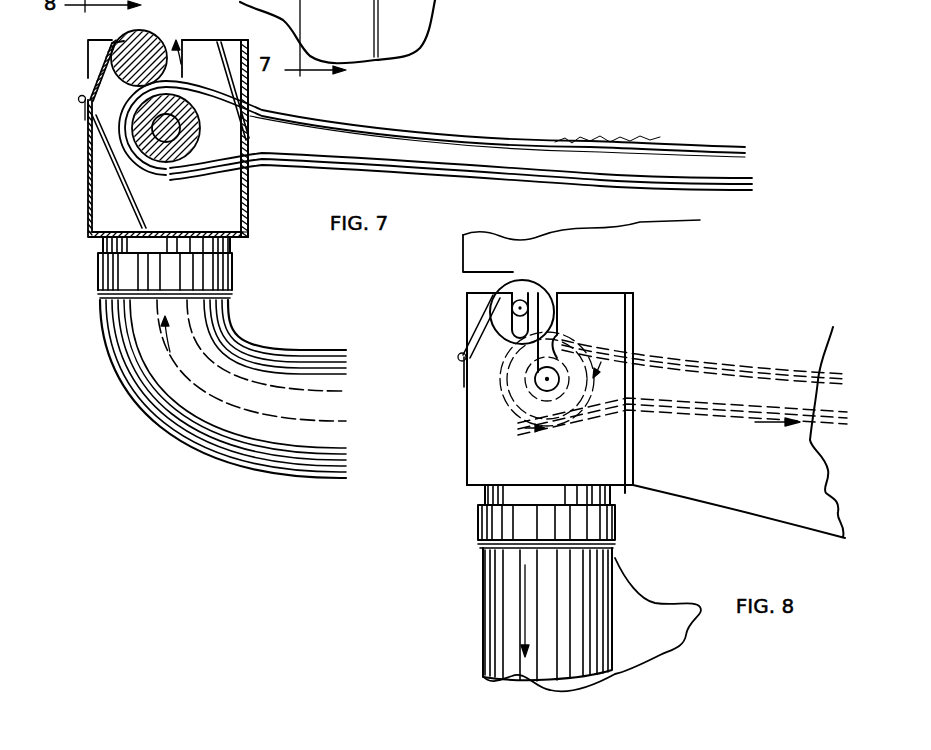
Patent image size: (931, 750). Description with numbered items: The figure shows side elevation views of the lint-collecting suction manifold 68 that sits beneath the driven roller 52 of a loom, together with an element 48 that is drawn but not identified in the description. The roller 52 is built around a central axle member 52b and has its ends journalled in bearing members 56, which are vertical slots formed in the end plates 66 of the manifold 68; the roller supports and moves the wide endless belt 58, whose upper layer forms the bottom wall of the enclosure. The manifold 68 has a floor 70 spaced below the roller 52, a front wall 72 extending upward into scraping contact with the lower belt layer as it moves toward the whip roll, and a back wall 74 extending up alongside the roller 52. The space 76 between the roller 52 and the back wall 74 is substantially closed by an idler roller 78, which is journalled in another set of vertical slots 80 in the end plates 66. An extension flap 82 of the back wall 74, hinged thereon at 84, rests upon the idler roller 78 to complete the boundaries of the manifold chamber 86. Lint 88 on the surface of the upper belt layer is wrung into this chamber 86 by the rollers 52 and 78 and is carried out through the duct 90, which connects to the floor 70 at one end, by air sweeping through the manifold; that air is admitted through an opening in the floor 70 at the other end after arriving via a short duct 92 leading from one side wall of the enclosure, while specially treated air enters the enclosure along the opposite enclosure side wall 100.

In FIG. 7, the cable 48 is at (500, 176).
In FIG. 8, the roller 52 is at (607, 352).
In FIG. 7, the central axle member 52b is at (252, 101).
In FIG. 8, the bearing members 56 is at (562, 340).
In FIG. 8, the endless belt 58 is at (704, 354).
In FIG. 7, the end plates 66 is at (213, 205).
In FIG. 8, the end plates 66 is at (478, 416).
In FIG. 7, the suction manifold 68 is at (264, 231).
In FIG. 8, the suction manifold 68 is at (638, 500).
In FIG. 7, the floor 70 is at (160, 237).
In FIG. 8, the floor 70 is at (480, 492).
In FIG. 7, the front wall 72 is at (250, 200).
In FIG. 8, the front wall 72 is at (634, 438).
In FIG. 7, the back wall 74 is at (88, 175).
In FIG. 8, the back wall 74 is at (467, 388).
In FIG. 7, the space 76 is at (105, 132).
In FIG. 7, the idler roller 78 is at (146, 48).
In FIG. 8, the idler roller 78 is at (528, 290).
In FIG. 8, the vertical slots 80 is at (530, 282).
In FIG. 7, the extension flap 82 is at (100, 62).
In FIG. 8, the extension flap 82 is at (477, 317).
In FIG. 7, the hinge 84 is at (80, 99).
In FIG. 7, the manifold chamber 86 is at (108, 208).
In FIG. 7, the lint 88 is at (592, 138).
In FIG. 8, the duct 90 is at (492, 638).
In FIG. 7, the duct 92 is at (176, 112).
In FIG. 8, the duct 92 is at (652, 604).
In FIG. 7, the enclosure side wall 100 is at (650, 232).
In FIG. 8, the enclosure side wall 100 is at (763, 482).